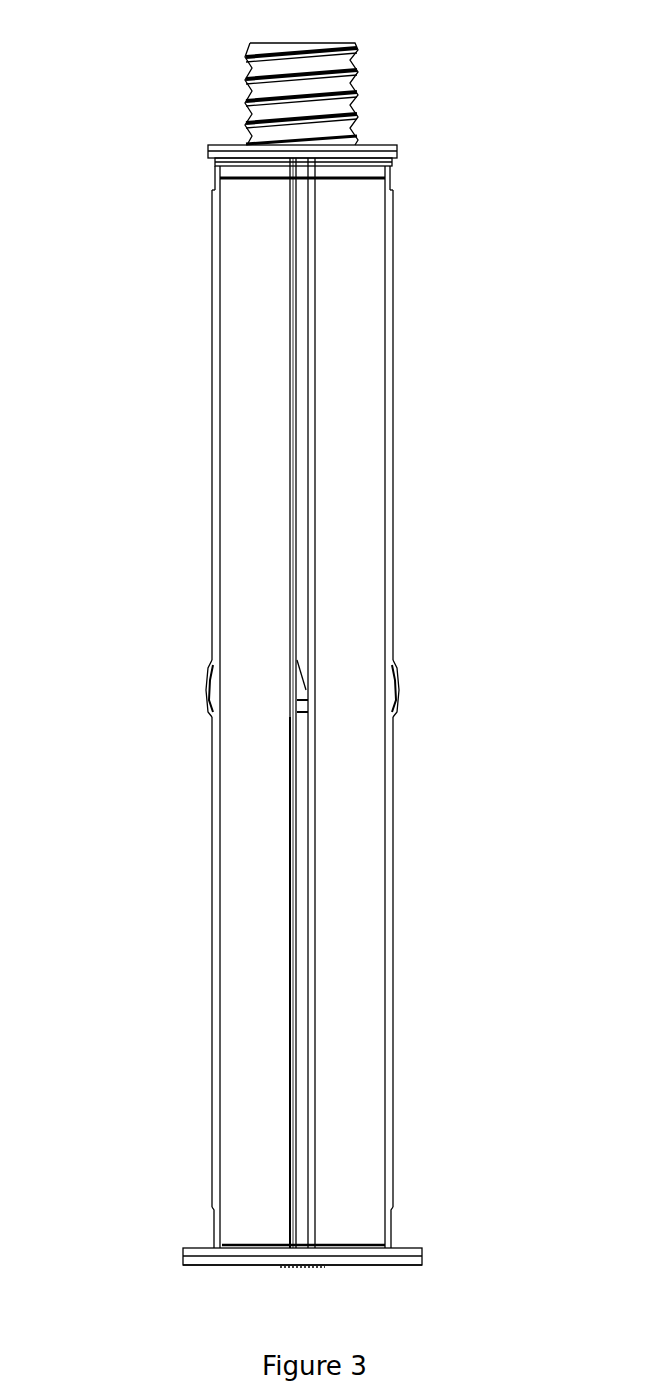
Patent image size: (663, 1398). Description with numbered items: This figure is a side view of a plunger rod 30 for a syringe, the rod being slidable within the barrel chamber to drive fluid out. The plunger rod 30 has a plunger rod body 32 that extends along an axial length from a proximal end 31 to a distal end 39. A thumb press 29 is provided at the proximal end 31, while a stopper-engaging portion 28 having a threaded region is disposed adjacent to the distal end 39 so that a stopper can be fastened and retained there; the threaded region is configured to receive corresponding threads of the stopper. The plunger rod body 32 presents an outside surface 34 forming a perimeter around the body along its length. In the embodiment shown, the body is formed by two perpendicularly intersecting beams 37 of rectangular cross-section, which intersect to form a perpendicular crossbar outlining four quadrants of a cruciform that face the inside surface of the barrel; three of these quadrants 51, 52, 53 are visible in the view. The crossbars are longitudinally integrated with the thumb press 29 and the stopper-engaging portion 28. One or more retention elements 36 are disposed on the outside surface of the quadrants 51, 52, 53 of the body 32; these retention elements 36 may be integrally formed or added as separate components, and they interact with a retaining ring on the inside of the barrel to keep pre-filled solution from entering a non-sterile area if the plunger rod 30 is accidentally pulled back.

The plunger rod 30 is at (115, 45).
The stopper-engaging portion 28 is at (248, 63).
The distal end 39 is at (368, 143).
The plunger rod body 32 is at (195, 237).
The outside surface 34 is at (352, 278).
The intersecting beams 37 is at (315, 423).
The retention element 36 is at (395, 702).
The quadrant 51 is at (212, 923).
The quadrant 53 is at (393, 922).
The quadrant 52 is at (305, 989).
The proximal end 31 is at (393, 1242).
The thumb press 29 is at (243, 1263).